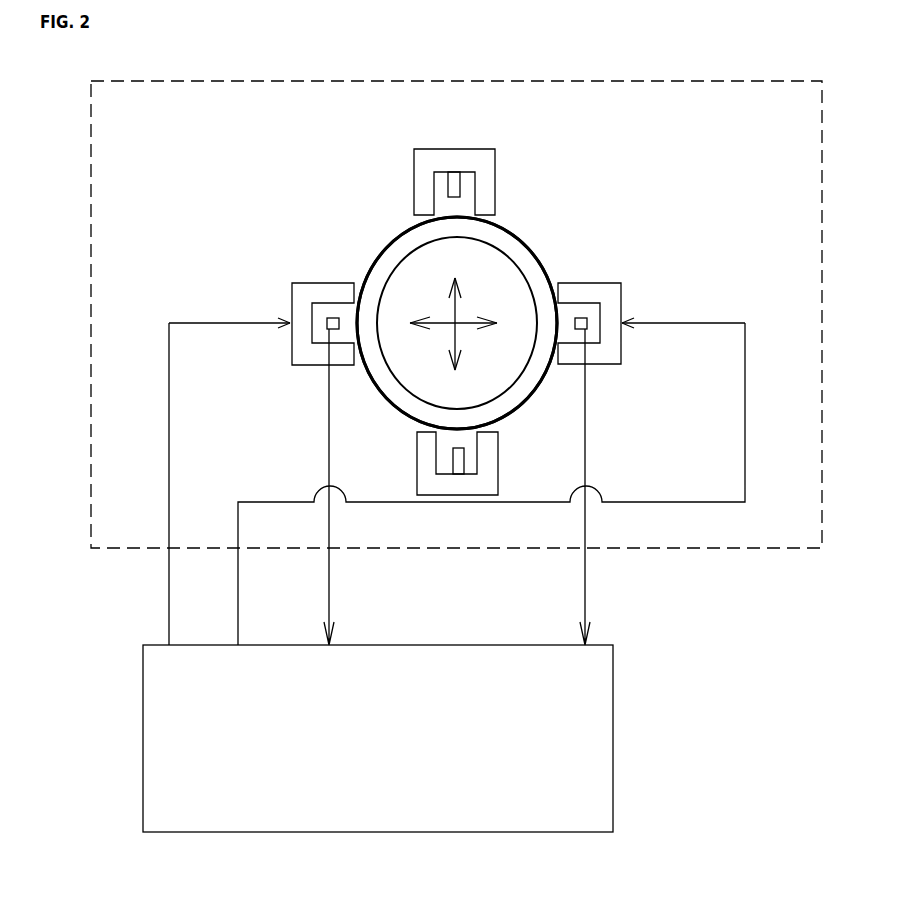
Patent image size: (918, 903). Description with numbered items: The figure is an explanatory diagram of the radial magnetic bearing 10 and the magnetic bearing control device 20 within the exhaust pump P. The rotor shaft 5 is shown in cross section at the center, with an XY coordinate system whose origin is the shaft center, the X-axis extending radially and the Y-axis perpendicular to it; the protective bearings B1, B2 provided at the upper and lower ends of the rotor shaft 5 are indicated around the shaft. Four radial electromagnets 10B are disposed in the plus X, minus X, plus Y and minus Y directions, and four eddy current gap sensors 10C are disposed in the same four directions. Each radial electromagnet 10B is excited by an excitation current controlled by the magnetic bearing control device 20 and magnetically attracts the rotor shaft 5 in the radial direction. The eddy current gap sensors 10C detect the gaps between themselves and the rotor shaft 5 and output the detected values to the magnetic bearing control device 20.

The exhaust pump P is at (90, 137).
The radial magnetic bearing 10 is at (387, 157).
The radial electromagnet 10B is at (490, 164).
The eddy current gap sensor 10C is at (460, 189).
The rotor shaft 5 is at (412, 278).
The protective bearing B1 is at (370, 263).
The protective bearing B2 is at (439, 308).
The magnetic bearing control device 20 is at (144, 790).